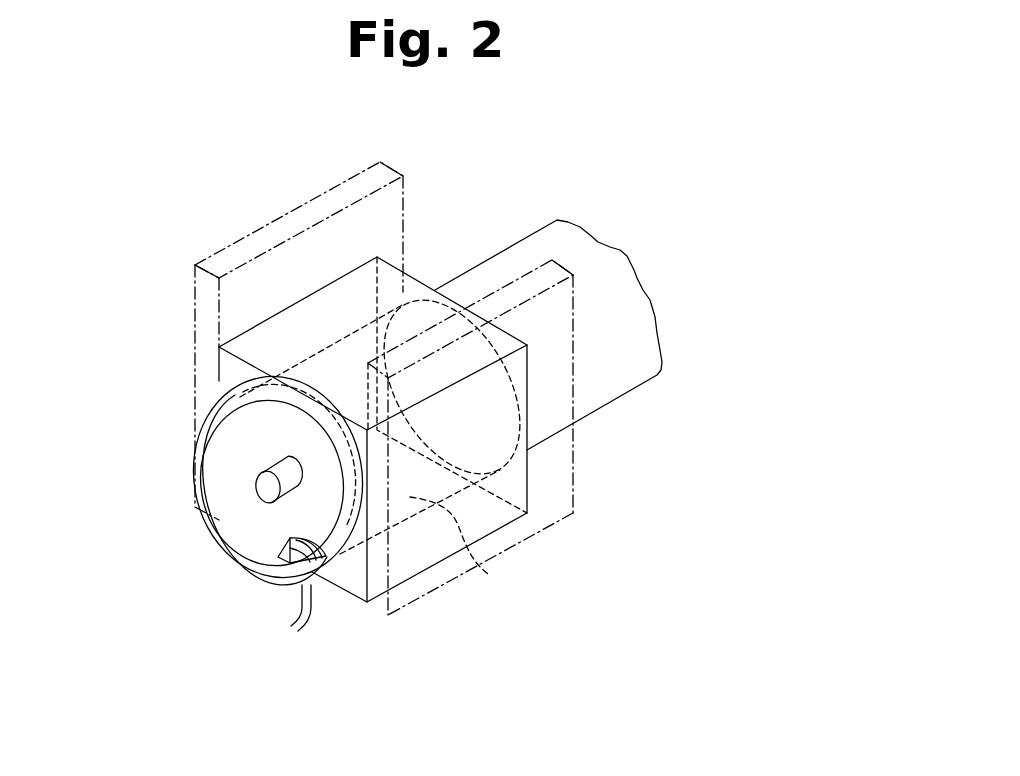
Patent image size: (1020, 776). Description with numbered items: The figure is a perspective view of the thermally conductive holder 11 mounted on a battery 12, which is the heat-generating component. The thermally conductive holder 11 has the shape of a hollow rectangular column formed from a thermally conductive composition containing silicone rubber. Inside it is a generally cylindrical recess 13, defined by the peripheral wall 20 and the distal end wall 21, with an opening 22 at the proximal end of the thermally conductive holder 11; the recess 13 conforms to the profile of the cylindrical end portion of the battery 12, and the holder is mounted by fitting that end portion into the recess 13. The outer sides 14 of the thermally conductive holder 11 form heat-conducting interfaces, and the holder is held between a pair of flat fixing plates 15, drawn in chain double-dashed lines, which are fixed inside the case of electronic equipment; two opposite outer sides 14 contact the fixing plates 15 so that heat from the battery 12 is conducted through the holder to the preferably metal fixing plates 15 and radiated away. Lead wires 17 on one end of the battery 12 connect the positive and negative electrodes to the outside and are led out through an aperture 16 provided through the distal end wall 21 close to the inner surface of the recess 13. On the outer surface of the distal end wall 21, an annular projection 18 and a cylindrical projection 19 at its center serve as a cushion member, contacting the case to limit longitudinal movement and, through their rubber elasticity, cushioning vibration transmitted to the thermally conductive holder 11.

The thermally conductive holder 11 is at (277, 314).
The battery 12 is at (477, 266).
The recess 13 is at (478, 563).
The outer sides 14 is at (195, 368).
The fixing plates 15 is at (307, 203).
The aperture 16 is at (280, 560).
The lead wires 17 is at (310, 624).
The annular projection 18 is at (193, 460).
The cylindrical projection 19 is at (260, 492).
The peripheral wall 20 is at (360, 327).
The distal end wall 21 is at (347, 582).
The opening 22 is at (416, 298).